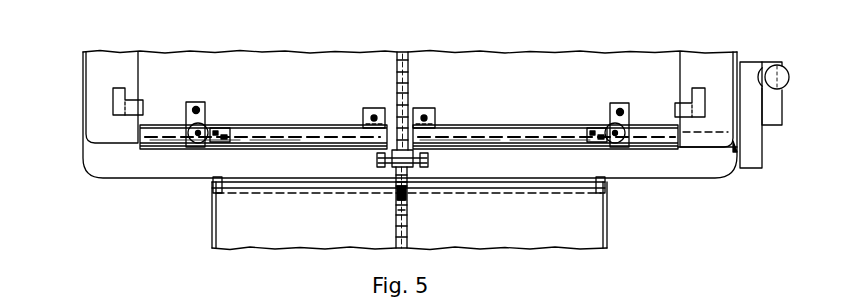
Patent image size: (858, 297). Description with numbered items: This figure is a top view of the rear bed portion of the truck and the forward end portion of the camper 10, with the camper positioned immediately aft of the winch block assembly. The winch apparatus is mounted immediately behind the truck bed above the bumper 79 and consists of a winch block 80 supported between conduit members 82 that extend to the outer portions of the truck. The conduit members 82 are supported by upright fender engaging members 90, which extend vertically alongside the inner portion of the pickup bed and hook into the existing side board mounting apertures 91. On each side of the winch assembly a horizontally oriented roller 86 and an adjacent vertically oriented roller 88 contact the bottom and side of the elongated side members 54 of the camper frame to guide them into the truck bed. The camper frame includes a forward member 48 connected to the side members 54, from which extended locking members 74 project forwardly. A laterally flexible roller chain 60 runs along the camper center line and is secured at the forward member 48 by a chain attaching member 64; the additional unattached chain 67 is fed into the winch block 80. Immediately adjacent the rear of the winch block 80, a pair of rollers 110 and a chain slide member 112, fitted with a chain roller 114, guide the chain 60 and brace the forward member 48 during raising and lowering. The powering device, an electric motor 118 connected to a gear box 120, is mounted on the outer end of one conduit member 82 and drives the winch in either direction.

The camper 10 is at (598, 255).
The forward member 48 is at (268, 188).
The elongated side members 54 is at (212, 233).
The chain 60 is at (397, 250).
The chain attaching member 64 is at (404, 214).
The unattached chain 67 is at (408, 58).
The extended locking members 74 is at (213, 182).
The bumper 79 is at (97, 164).
The winch block 80 is at (387, 145).
The conduit members 82 is at (265, 137).
The horizontally oriented roller 86 is at (222, 132).
The vertically oriented roller 88 is at (192, 127).
The fender engaging members 90 is at (685, 108).
The side board mounting apertures 91 is at (113, 92).
The rollers 110 is at (379, 160).
The chain slide member 112 is at (409, 182).
The chain roller 114 is at (395, 180).
The electric motor 118 is at (777, 73).
The gear box 120 is at (772, 107).